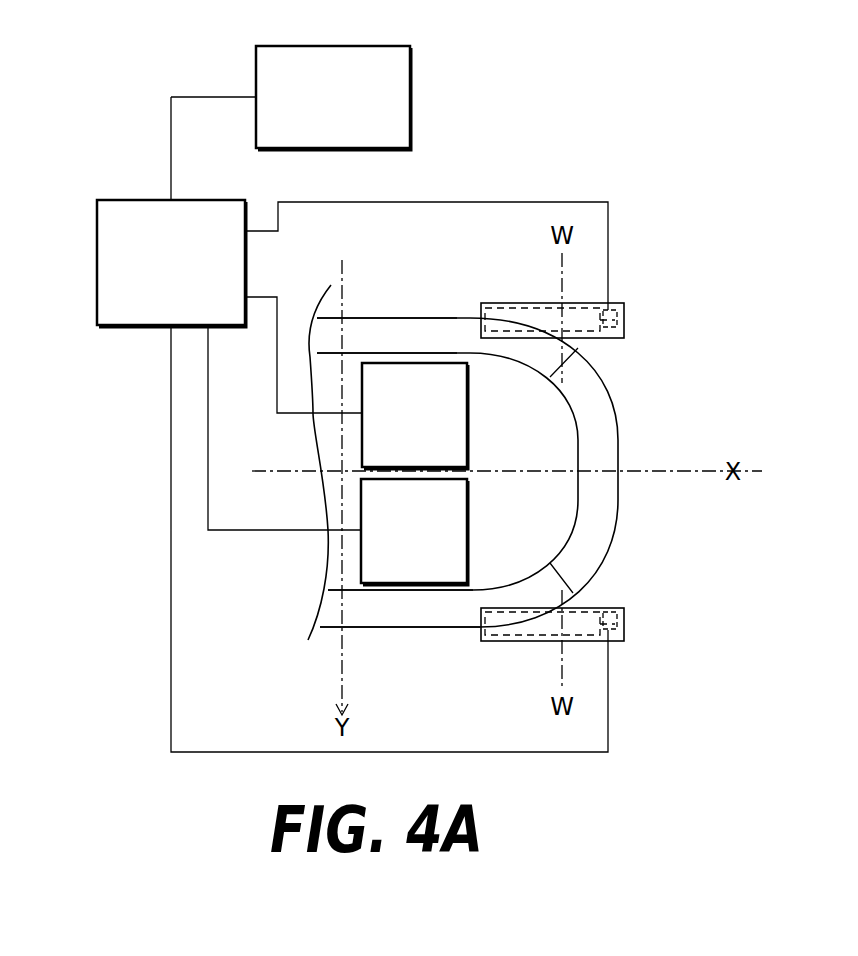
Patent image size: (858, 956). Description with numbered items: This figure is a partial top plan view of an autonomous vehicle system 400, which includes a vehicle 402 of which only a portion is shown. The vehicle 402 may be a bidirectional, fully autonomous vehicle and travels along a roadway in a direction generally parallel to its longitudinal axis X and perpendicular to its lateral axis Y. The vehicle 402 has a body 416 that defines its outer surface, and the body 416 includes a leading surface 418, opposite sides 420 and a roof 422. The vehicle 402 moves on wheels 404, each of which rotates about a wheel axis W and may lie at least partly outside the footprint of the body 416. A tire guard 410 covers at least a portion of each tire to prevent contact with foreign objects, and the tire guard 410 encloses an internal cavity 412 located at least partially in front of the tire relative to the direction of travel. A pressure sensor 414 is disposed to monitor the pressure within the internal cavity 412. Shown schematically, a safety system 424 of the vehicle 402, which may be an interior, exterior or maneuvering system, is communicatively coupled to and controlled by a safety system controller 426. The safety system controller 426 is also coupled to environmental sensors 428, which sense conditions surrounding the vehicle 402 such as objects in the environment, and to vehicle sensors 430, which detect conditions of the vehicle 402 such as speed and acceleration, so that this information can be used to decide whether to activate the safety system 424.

The autonomous vehicle system 400 is at (652, 162).
The vehicle 402 is at (684, 528).
The wheel 404 is at (592, 343).
The tire guard 410 is at (615, 304).
The internal cavity 412 is at (624, 330).
The pressure sensor 414 is at (624, 313).
The body 416 is at (696, 424).
The leading surface 418 is at (578, 541).
The opposite sides 420 is at (403, 349).
The roof 422 is at (495, 441).
The safety system 424 is at (399, 570).
The safety system controller 426 is at (155, 317).
The environmental sensors 428 is at (317, 137).
The vehicle sensors 430 is at (399, 452).